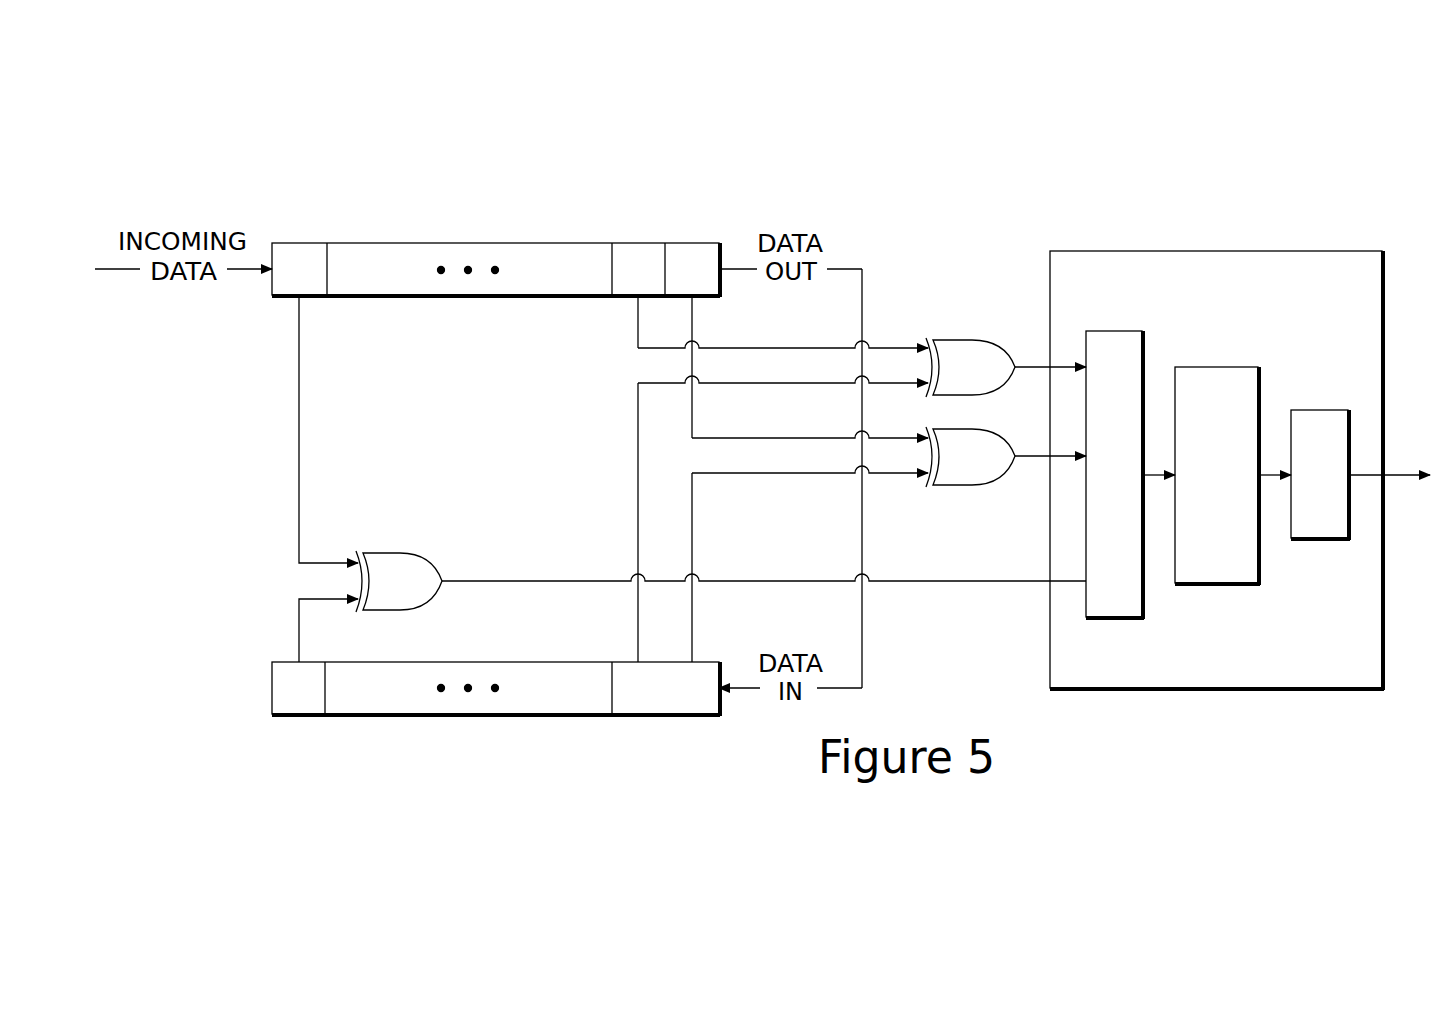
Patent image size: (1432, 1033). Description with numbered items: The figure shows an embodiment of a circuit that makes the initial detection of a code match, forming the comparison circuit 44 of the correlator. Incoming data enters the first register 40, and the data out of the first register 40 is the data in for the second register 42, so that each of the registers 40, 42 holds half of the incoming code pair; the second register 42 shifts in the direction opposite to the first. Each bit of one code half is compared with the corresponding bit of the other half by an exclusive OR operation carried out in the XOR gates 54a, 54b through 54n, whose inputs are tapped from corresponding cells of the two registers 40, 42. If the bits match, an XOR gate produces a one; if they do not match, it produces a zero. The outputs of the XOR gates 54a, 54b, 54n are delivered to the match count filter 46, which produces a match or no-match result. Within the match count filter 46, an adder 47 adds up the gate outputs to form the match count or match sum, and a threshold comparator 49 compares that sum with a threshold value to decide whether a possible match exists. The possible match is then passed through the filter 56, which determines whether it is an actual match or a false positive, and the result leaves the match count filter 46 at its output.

The comparison circuit 44 is at (377, 190).
The first register 40 is at (543, 243).
The second register 42 is at (543, 662).
The XOR gate 54a is at (963, 339).
The XOR gate 54b is at (958, 487).
The XOR gate 54n is at (389, 553).
The match count filter 46 is at (1222, 251).
The adder 47 is at (1115, 331).
The threshold comparator 49 is at (1213, 367).
The filter 56 is at (1320, 410).